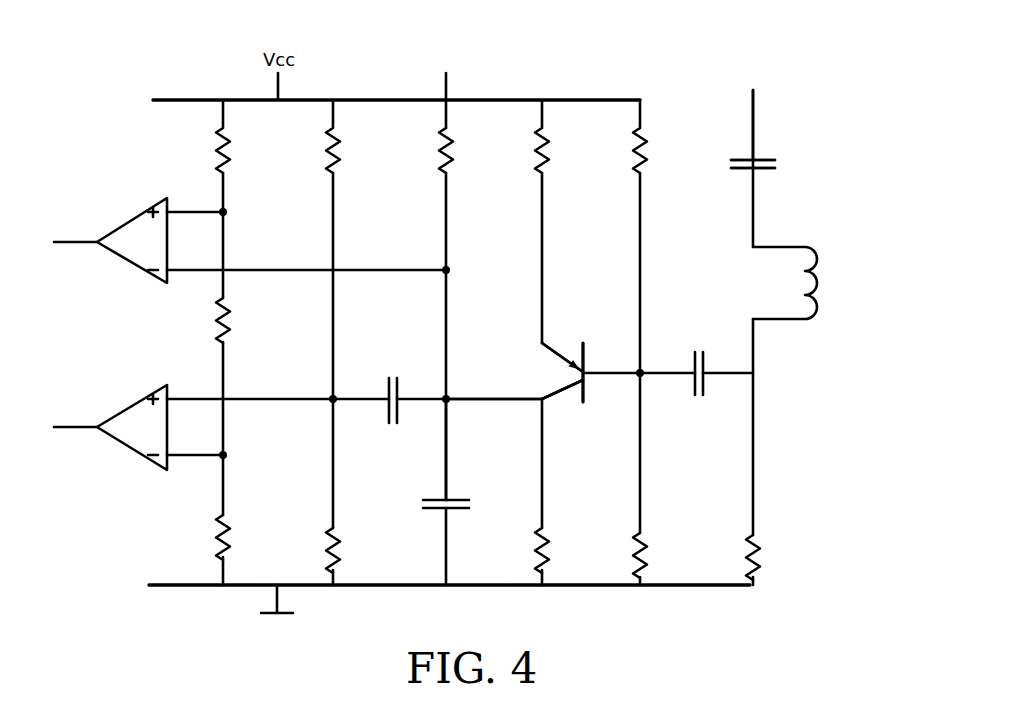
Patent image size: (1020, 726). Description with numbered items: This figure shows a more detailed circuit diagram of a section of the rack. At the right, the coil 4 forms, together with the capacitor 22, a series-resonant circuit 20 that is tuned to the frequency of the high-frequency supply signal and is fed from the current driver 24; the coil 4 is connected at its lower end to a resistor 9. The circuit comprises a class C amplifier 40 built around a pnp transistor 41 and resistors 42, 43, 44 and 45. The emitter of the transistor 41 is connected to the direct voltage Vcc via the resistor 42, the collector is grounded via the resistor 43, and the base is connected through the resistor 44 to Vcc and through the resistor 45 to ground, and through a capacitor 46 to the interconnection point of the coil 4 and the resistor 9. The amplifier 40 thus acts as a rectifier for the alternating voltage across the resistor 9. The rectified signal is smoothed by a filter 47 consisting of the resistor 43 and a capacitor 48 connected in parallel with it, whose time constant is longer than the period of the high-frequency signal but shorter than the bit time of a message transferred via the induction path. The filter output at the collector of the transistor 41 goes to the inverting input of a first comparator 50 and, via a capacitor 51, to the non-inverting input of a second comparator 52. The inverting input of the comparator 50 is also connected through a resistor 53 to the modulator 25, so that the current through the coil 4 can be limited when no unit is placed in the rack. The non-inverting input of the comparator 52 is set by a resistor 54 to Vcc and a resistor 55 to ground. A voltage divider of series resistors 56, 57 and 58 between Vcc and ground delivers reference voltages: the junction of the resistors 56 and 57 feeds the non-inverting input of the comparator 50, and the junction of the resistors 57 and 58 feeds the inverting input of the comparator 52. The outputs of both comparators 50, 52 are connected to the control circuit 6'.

The coil 4 is at (806, 272).
The resistor 9 is at (757, 540).
The series-resonant circuit 20 is at (806, 146).
The capacitor 22 is at (761, 170).
The current driver 24 is at (751, 113).
The modulator 25 is at (450, 88).
The control circuit 6' is at (75, 336).
The class C amplifier 40 is at (597, 282).
The pnp transistor 41 is at (585, 392).
The resistor 42 is at (546, 162).
The resistor 43 is at (546, 532).
The resistor 44 is at (645, 158).
The resistor 45 is at (645, 535).
The capacitor 46 is at (705, 392).
The filter 47 is at (502, 463).
The capacitor 48 is at (456, 510).
The first comparator 50 is at (129, 221).
The capacitor 51 is at (387, 390).
The second comparator 52 is at (143, 397).
The resistor 53 is at (450, 162).
The resistor 54 is at (337, 162).
The resistor 55 is at (337, 532).
The resistor 56 is at (227, 162).
The resistor 57 is at (228, 330).
The resistor 58 is at (226, 522).